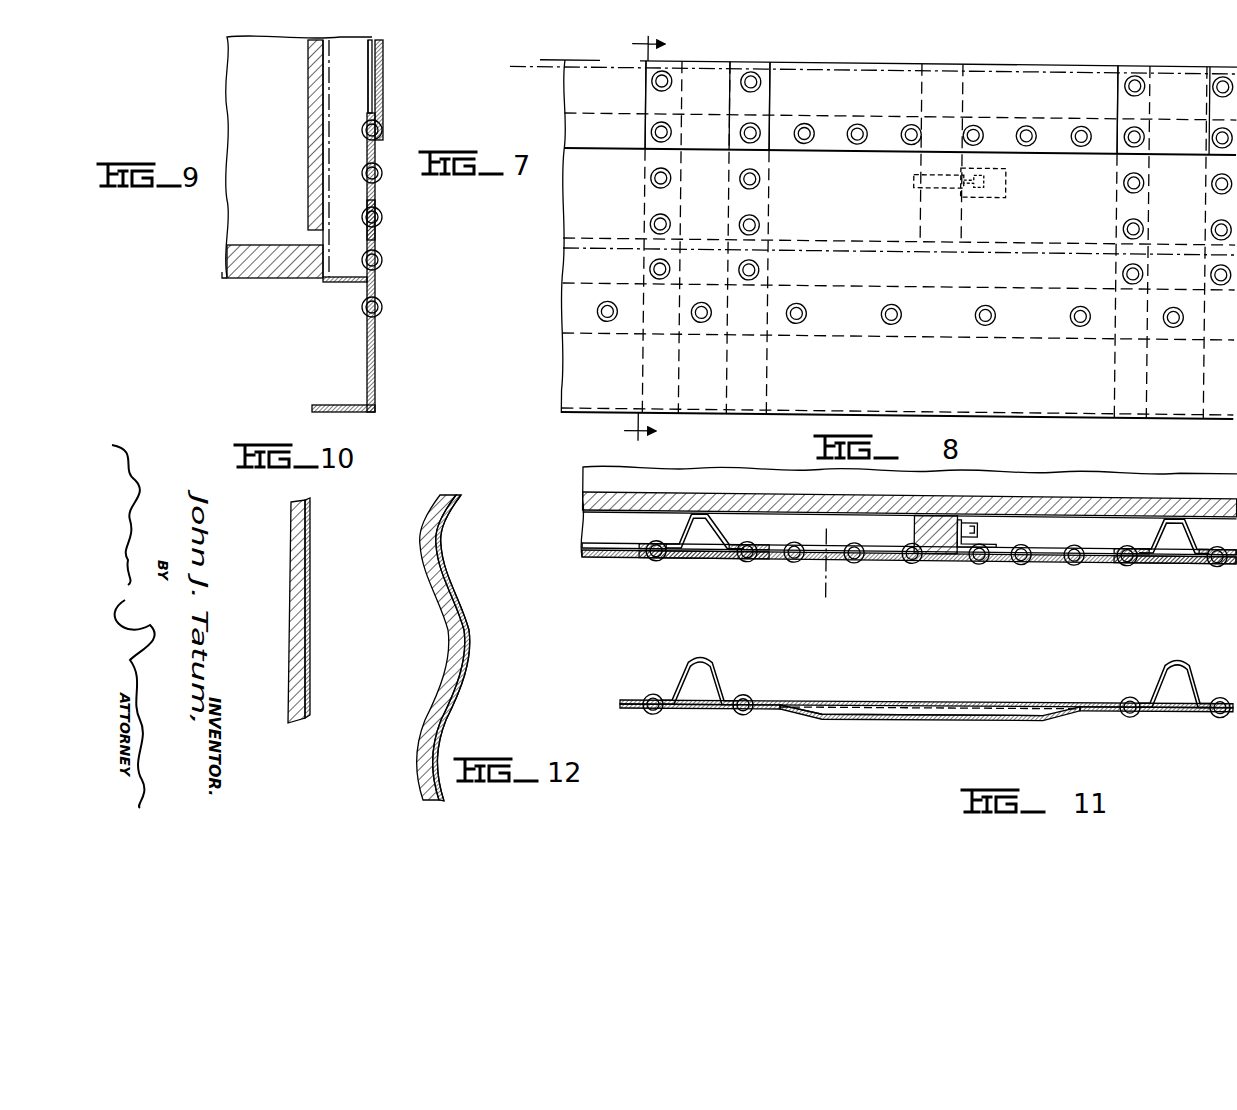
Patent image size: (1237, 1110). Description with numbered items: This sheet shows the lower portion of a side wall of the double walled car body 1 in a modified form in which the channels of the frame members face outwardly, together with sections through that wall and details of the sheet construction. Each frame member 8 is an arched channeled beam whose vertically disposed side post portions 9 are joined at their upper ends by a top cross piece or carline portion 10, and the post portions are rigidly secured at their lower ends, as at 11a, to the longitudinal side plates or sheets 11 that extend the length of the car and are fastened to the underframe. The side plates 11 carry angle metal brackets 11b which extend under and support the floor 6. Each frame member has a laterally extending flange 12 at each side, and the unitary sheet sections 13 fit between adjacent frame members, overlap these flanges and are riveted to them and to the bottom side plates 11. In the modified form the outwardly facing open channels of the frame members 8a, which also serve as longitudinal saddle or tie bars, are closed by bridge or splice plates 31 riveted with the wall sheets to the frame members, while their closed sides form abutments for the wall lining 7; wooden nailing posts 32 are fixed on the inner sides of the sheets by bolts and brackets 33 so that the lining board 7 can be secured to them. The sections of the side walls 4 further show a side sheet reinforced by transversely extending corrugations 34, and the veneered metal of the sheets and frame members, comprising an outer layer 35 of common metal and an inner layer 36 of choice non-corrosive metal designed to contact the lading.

In FIG. 9, the double walled car body 1 is at (245, 106).
In FIG. 11, the side walls 4 is at (785, 710).
In FIG. 9, the floor 6 is at (282, 266).
In FIG. 9, the lining 7 is at (308, 150).
In FIG. 8, the lining 7 is at (1050, 495).
In FIG. 9, the frame members 8 is at (350, 85).
In FIG. 7, the frame members 8 is at (501, 42).
In FIG. 11, the frame members 8 is at (706, 662).
In FIG. 7, the frame members with outwardly facing channels 8a is at (738, 106).
In FIG. 8, the frame members with outwardly facing channels 8a is at (722, 515).
In FIG. 7, the side post portions 9 is at (634, 244).
In FIG. 8, the top cross piece or carline portion 10 is at (820, 562).
In FIG. 9, the longitudinal side plates or sheets 11 is at (378, 352).
In FIG. 7, the longitudinal side plates or sheets 11 is at (590, 362).
In FIG. 8, the longitudinal side plates or sheets 11 is at (604, 545).
In FIG. 11, the longitudinal side plates or sheets 11 is at (693, 712).
In FIG. 9, the lower end securement of post portions 11a is at (384, 222).
In FIG. 9, the angle metal brackets 11b is at (341, 283).
In FIG. 9, the laterally extending flange 12 is at (377, 64).
In FIG. 8, the laterally extending flange 12 is at (909, 549).
In FIG. 11, the laterally extending flange 12 is at (640, 699).
In FIG. 9, the unitary sheet sections 13 is at (384, 118).
In FIG. 7, the unitary sheet sections 13 is at (585, 105).
In FIG. 8, the unitary sheet sections 13 is at (936, 554).
In FIG. 11, the unitary sheet sections 13 is at (936, 706).
In FIG. 9, the bridge or splice plates 31 is at (384, 91).
In FIG. 7, the bridge or splice plates 31 is at (660, 93).
In FIG. 8, the bridge or splice plates 31 is at (702, 560).
In FIG. 7, the wooden nailing posts 32 is at (942, 156).
In FIG. 8, the wooden nailing posts 32 is at (905, 511).
In FIG. 7, the bolts and brackets 33 is at (980, 193).
In FIG. 8, the bolts and brackets 33 is at (998, 526).
In FIG. 12, the transversely extending corrugations 34 is at (460, 592).
In FIG. 11, the transversely extending corrugations 34 is at (990, 712).
In FIG. 10, the outer layer 35 is at (298, 642).
In FIG. 12, the outer layer 35 is at (452, 640).
In FIG. 10, the inner layer 36 is at (310, 596).
In FIG. 12, the inner layer 36 is at (474, 648).